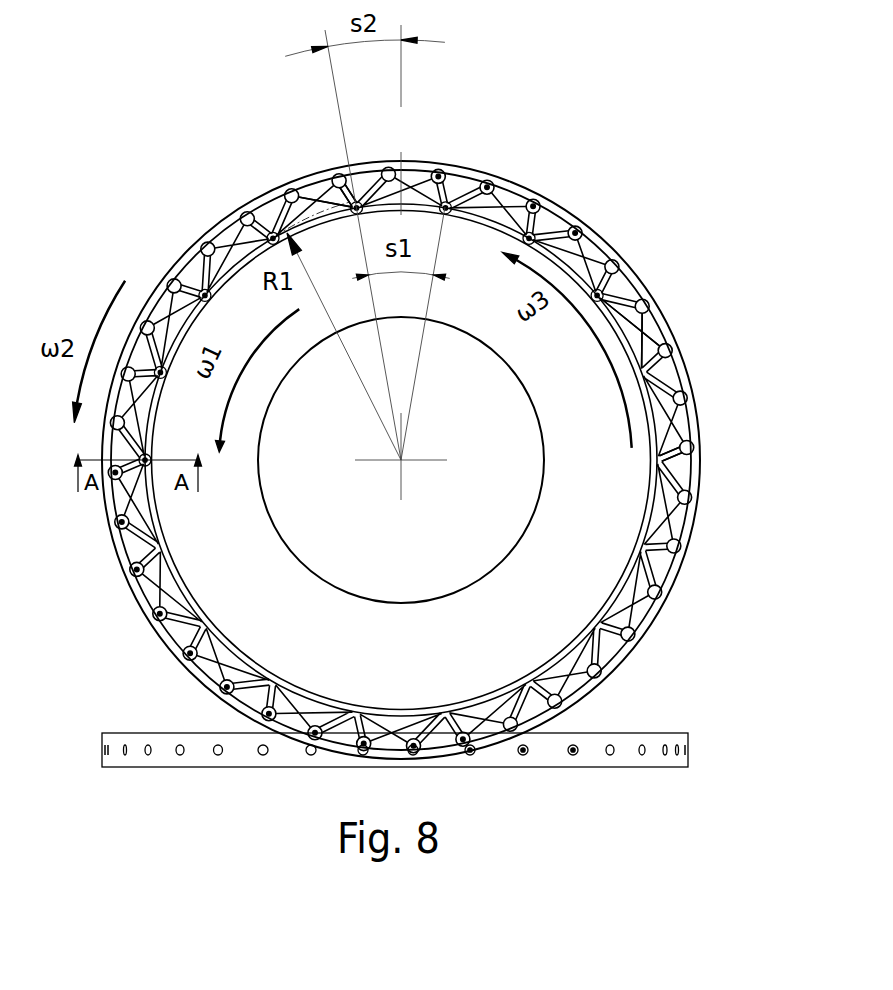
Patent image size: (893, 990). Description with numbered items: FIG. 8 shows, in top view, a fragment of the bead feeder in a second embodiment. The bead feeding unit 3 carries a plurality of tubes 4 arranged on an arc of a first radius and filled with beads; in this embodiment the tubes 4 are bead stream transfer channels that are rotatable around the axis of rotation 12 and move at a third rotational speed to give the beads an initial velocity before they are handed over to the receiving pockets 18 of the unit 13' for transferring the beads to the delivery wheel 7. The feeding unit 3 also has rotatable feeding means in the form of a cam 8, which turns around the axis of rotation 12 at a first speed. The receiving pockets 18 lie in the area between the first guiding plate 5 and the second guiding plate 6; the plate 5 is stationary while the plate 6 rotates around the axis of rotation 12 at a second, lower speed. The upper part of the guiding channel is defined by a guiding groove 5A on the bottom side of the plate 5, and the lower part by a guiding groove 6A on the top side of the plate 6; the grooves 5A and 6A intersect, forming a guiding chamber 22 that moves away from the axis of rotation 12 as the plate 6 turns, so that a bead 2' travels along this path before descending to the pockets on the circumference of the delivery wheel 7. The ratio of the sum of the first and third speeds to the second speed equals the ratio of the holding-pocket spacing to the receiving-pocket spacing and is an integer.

The bead 2' is at (277, 195).
The bead feeding unit 3 is at (108, 265).
The tubes 4 is at (487, 183).
The first guiding plate 5 is at (547, 225).
The guiding groove 5A is at (330, 172).
The second guiding plate 6 is at (600, 250).
The guiding groove 6A is at (387, 167).
The delivery wheel 7 is at (203, 763).
The cam 8 is at (212, 573).
The axis of rotation 12 is at (401, 460).
The unit for transferring the beads 13' is at (345, 270).
The receiving pockets 18 is at (443, 207).
The guiding chamber 22 is at (355, 203).